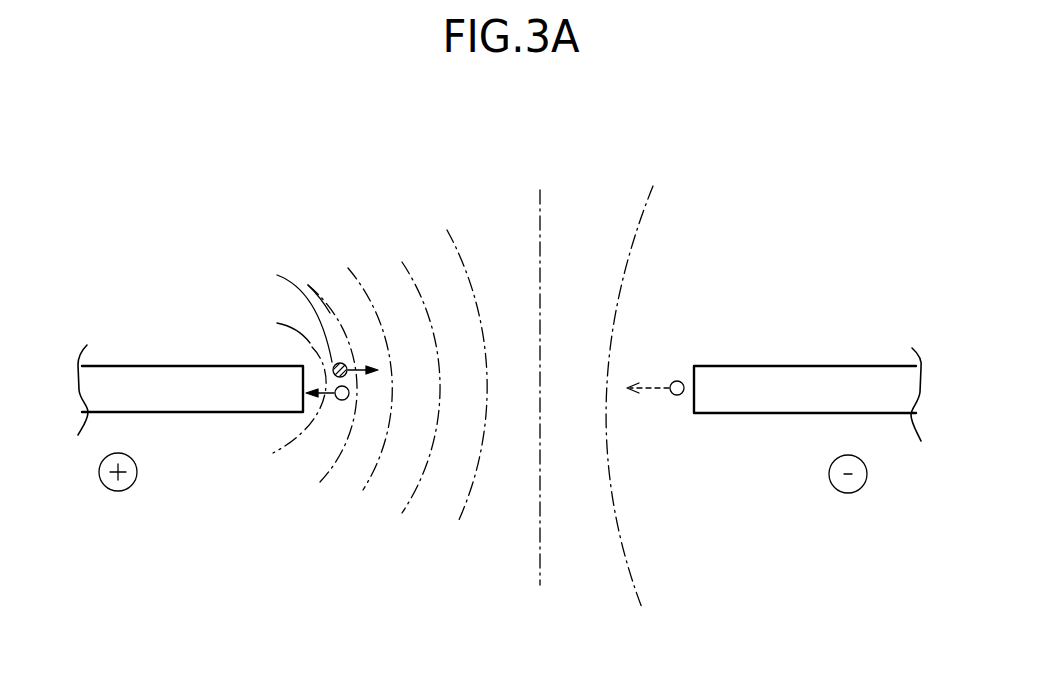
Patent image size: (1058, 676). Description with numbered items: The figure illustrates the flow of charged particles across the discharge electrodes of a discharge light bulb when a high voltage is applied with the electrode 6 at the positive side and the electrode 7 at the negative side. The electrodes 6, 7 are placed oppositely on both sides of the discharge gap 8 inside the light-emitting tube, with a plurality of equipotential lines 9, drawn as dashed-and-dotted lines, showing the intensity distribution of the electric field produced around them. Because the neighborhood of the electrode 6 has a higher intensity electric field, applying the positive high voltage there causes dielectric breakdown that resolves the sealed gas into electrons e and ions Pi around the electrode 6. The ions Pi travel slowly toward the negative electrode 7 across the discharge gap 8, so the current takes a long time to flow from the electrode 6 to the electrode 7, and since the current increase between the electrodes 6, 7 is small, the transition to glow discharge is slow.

The electrode 6 is at (221, 366).
The electrode 7 is at (796, 367).
The discharge gap 8 is at (582, 378).
The equipotential lines 9 is at (270, 162).
The ions Pi is at (314, 323).
The electrons e is at (336, 401).